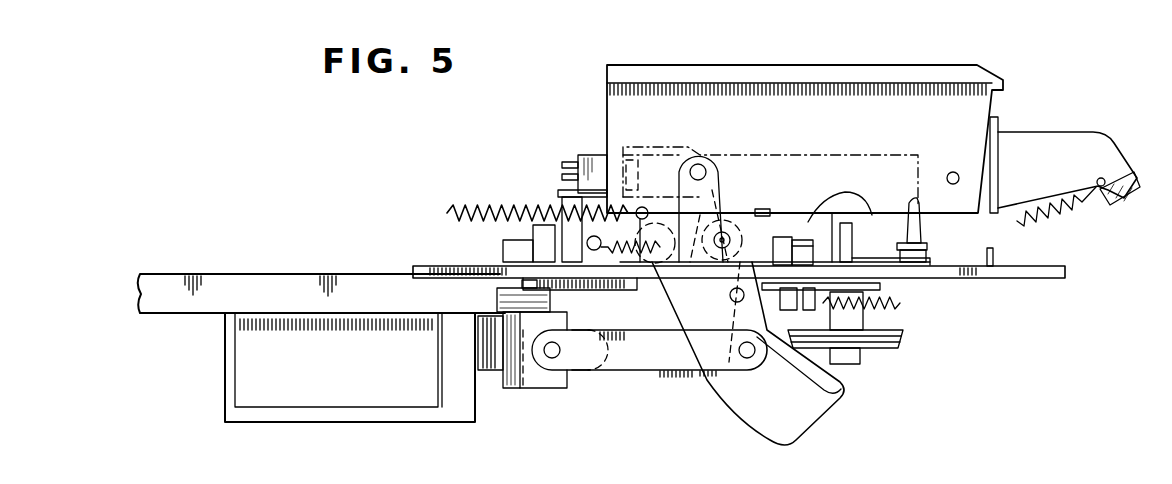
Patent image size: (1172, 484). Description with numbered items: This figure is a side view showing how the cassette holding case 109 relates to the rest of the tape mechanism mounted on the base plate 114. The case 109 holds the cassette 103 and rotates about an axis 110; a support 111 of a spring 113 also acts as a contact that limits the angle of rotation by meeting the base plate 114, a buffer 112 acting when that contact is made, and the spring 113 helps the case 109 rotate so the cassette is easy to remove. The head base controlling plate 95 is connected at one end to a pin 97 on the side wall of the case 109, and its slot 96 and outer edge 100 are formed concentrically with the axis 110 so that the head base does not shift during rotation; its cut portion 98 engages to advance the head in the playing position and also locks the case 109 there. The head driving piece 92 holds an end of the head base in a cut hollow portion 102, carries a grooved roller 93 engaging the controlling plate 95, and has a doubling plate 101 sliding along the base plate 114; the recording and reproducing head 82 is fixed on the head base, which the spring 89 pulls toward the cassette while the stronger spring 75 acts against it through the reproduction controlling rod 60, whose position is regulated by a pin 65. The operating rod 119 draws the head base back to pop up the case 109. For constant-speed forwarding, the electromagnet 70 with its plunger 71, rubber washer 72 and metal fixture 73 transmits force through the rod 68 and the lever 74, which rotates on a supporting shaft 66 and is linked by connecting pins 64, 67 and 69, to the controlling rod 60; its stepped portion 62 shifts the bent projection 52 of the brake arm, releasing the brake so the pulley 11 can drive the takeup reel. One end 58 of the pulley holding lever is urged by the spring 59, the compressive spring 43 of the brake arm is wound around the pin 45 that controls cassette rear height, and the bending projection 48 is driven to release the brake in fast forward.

The pulley 11 is at (878, 346).
The compressive spring 43 is at (927, 252).
The pin 45 is at (921, 230).
The bending projection 48 is at (994, 262).
The bent projection 52 is at (860, 210).
The end of holding lever 58 is at (856, 168).
The spring 59 is at (902, 306).
The reproduction controlling rod 60 is at (736, 213).
The stepped portion 62 is at (846, 210).
The connecting pin 64 is at (720, 200).
The pin 65 is at (768, 212).
The supporting shaft 66 is at (730, 296).
The connecting pin 67 is at (750, 360).
The rod 68 is at (661, 372).
The connecting pin 69 is at (561, 355).
The electromagnet 70 is at (373, 418).
The plunger 71 is at (488, 350).
The rubber washer 72 is at (507, 389).
The metal fixture 73 is at (543, 389).
The lever 74 is at (719, 356).
The spring 75 is at (494, 204).
The recording and reproducing head 82 is at (590, 158).
The spring 89 is at (643, 280).
The head driving piece 92 is at (503, 245).
The grooved roller 93 is at (648, 177).
The head base controlling plate 95 is at (806, 424).
The slot 96 is at (840, 386).
The pin 97 is at (700, 163).
The cut portion 98 is at (677, 258).
The outer edge 100 is at (726, 396).
The doubling plate 101 is at (620, 312).
The cut hollow portion 102 is at (570, 280).
The cassette 103 is at (812, 134).
The cassette holding case 109 is at (878, 52).
The axis 110 is at (954, 172).
The support 111 is at (1050, 140).
The buffer 112 is at (1128, 206).
The spring 113 is at (1070, 206).
The base plate 114 is at (947, 284).
The operating rod 119 is at (375, 279).